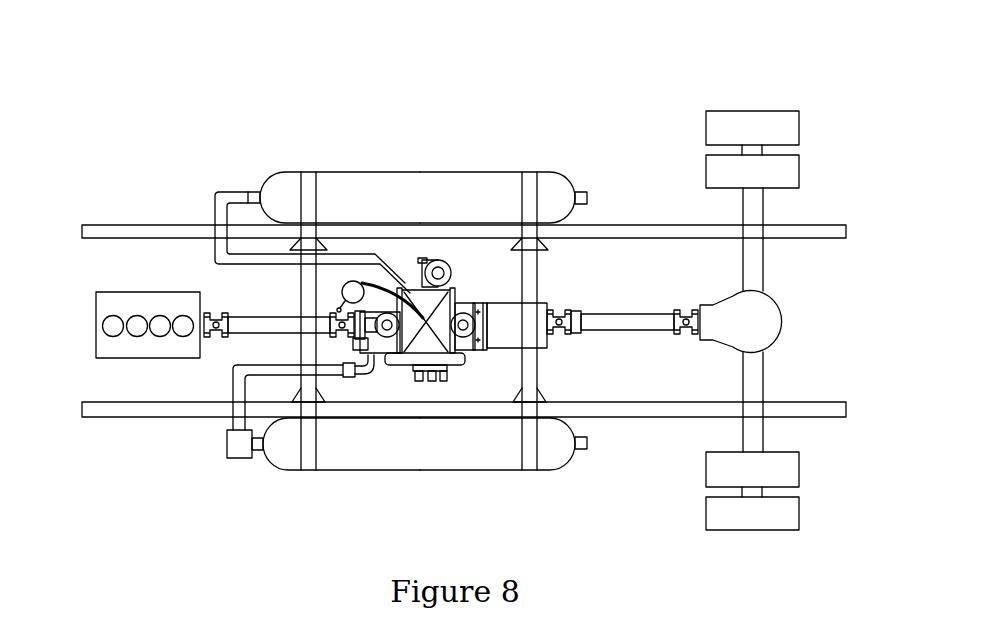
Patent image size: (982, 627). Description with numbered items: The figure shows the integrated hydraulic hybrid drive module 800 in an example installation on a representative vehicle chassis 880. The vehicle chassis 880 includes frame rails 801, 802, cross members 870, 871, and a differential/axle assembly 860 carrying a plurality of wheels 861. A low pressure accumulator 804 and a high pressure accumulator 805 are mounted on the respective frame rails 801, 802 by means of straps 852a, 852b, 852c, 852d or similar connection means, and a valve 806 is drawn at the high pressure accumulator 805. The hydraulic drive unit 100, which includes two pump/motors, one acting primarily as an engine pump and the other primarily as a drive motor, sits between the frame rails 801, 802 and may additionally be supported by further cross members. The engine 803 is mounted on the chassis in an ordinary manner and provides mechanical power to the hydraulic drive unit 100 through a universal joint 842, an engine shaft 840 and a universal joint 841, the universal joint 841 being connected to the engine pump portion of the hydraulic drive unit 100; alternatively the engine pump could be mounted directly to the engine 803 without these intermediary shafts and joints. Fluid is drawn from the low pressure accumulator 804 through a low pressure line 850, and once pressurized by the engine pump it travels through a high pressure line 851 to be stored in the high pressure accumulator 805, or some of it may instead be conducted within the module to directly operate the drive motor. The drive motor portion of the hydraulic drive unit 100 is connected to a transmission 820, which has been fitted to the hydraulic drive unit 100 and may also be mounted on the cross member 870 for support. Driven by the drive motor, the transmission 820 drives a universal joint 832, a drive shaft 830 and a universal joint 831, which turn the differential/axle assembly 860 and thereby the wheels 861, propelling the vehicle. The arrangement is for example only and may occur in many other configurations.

The integrated hydraulic hybrid drive module 800 is at (389, 77).
The frame rail 801 is at (820, 224).
The frame rail 802 is at (825, 402).
The engine 803 is at (130, 292).
The low pressure accumulator 804 is at (417, 190).
The high pressure accumulator 805 is at (433, 485).
The valve 806 is at (227, 443).
The transmission 820 is at (547, 338).
The drive shaft 830 is at (650, 313).
The universal joint 831 is at (690, 312).
The universal joint 832 is at (555, 312).
The engine shaft 840 is at (333, 315).
The universal joint 841 is at (333, 300).
The universal joint 842 is at (213, 318).
The low pressure line 850 is at (213, 210).
The high pressure line 851 is at (233, 388).
The strap 852a is at (525, 173).
The strap 852b is at (285, 320).
The strap 852c is at (310, 470).
The strap 852d is at (528, 470).
The differential/axle assembly 860 is at (753, 322).
The wheels 861 is at (790, 111).
The cross member 870 is at (540, 372).
The cross member 871 is at (320, 378).
The vehicle chassis 880 is at (650, 428).
The hydraulic drive unit 100 is at (458, 279).